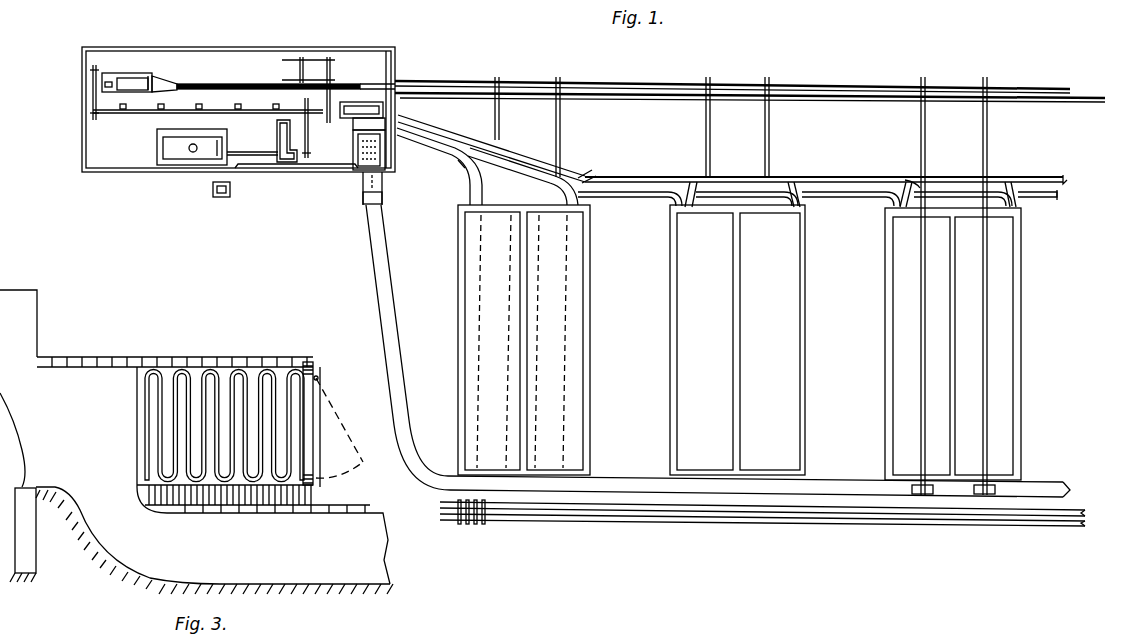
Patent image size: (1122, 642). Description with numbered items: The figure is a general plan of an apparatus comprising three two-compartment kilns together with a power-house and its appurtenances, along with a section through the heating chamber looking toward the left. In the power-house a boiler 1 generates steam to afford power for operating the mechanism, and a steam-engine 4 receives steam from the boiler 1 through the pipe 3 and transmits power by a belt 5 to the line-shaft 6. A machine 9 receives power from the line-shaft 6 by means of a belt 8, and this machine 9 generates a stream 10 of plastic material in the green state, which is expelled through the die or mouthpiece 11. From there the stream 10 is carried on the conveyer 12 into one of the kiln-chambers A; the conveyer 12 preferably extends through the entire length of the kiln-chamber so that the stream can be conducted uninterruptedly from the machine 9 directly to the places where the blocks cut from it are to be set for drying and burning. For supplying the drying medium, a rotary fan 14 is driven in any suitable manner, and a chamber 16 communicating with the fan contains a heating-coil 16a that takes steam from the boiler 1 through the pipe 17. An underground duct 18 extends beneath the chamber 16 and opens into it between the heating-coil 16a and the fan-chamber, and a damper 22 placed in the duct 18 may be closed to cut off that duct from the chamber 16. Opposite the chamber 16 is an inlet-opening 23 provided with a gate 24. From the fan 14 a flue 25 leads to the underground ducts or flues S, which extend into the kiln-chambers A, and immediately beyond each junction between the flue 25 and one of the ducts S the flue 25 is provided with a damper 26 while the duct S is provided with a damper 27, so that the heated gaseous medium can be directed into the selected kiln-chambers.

In FIG. 1, the boiler 1 is at (170, 149).
In FIG. 1, the pipe 3 is at (248, 146).
In FIG. 1, the steam-engine 4 is at (278, 146).
In FIG. 1, the belt 5 is at (309, 138).
In FIG. 1, the line-shaft 6 is at (221, 114).
In FIG. 1, the belt 8 is at (99, 92).
In FIG. 1, the machine 9 is at (140, 78).
In FIG. 1, the stream 10 is at (228, 85).
In FIG. 1, the die or mouthpiece 11 is at (183, 80).
In FIG. 1, the conveyer 12 is at (462, 88).
In FIG. 1, the rotary fan 14 is at (392, 118).
In FIG. 3, the rotary fan 14 is at (156, 328).
In FIG. 1, the chamber 16 is at (388, 162).
In FIG. 3, the chamber 16 is at (170, 375).
In FIG. 1, the heating-coil 16a is at (390, 150).
In FIG. 3, the heating-coil 16a is at (222, 376).
In FIG. 1, the pipe 17 is at (345, 176).
In FIG. 1, the underground duct 18 is at (386, 292).
In FIG. 3, the underground duct 18 is at (316, 575).
In FIG. 1, the damper 22 is at (384, 203).
In FIG. 3, the inlet-opening 23 is at (310, 400).
In FIG. 3, the gate 24 is at (356, 435).
In FIG. 1, the flue 25 is at (440, 140).
In FIG. 1, the damper 26 is at (588, 176).
In FIG. 1, the damper 27 is at (457, 165).
In FIG. 1, the kiln-chambers A is at (739, 342).
In FIG. 1, the underground ducts or flues S is at (580, 207).